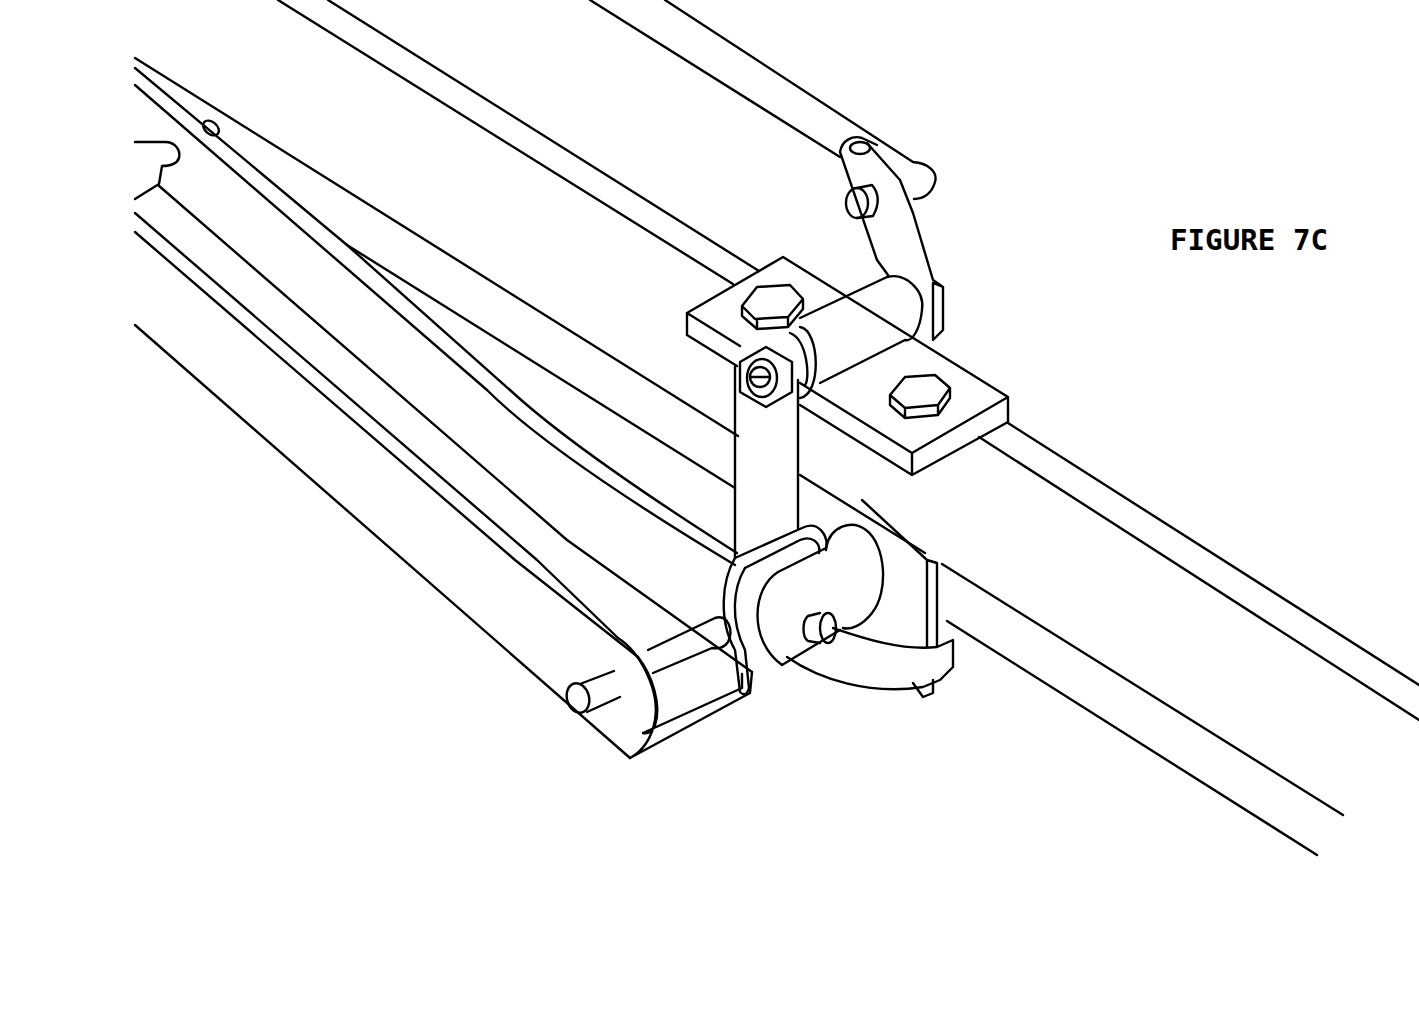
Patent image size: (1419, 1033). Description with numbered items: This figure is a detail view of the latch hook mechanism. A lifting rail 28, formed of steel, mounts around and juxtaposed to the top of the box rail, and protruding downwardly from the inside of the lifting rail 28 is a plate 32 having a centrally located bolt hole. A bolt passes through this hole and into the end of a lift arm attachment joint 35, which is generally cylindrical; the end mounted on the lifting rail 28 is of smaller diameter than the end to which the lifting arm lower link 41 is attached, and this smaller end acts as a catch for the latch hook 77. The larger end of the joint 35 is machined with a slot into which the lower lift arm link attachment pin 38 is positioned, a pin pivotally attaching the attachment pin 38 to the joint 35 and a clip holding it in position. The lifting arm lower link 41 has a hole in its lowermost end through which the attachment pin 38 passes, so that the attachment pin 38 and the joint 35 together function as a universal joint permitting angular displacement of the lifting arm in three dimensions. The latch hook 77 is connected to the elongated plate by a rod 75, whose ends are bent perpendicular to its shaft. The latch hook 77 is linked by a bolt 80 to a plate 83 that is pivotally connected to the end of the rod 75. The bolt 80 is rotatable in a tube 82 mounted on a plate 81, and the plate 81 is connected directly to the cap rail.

The lifting rail 28 is at (1207, 647).
The rod 75 is at (781, 91).
The plate 83 is at (940, 235).
The tube 82 is at (866, 306).
The plate 81 is at (975, 398).
The bolt 80 is at (745, 372).
The lift arm attachment joint 35 is at (797, 620).
The latch hook 77 is at (853, 667).
The plate 32 is at (955, 630).
The lifting arm lower link 41 is at (373, 503).
The lower lift arm link attachment pin 38 is at (677, 653).